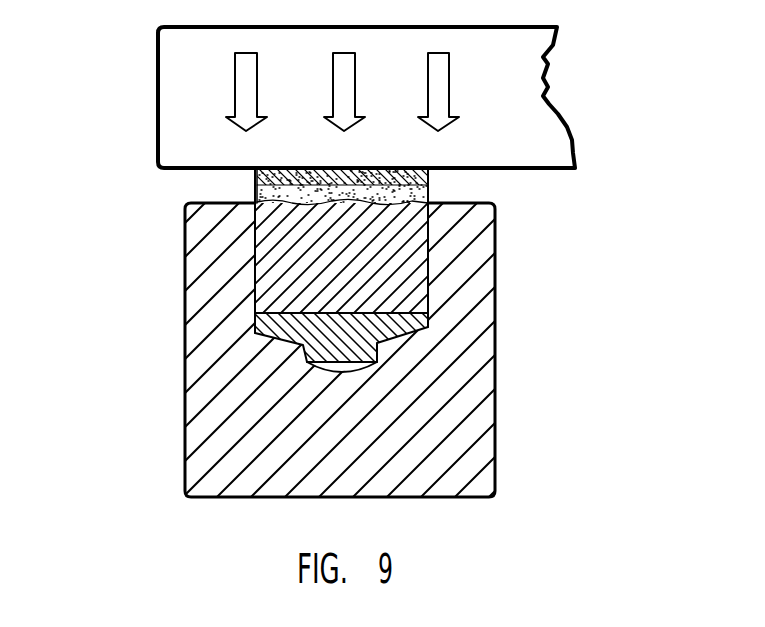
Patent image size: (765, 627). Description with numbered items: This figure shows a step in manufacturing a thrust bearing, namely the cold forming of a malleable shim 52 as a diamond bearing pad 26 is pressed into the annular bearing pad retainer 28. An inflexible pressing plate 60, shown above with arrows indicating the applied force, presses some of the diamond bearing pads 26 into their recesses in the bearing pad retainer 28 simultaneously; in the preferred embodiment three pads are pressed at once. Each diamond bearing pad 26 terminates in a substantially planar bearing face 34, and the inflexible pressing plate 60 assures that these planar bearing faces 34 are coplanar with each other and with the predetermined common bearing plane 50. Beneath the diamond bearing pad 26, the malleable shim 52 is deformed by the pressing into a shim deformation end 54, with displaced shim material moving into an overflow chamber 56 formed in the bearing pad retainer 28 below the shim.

The inflexible pressing plate 60 is at (523, 140).
The predetermined common bearing plane 50 is at (205, 170).
The planar bearing face 34 is at (432, 171).
The diamond bearing pad 26 is at (392, 250).
The malleable shim 52 is at (398, 323).
The shim deformation end 54 is at (303, 360).
The overflow chamber 56 is at (305, 364).
The annular bearing pad retainer 28 is at (465, 442).